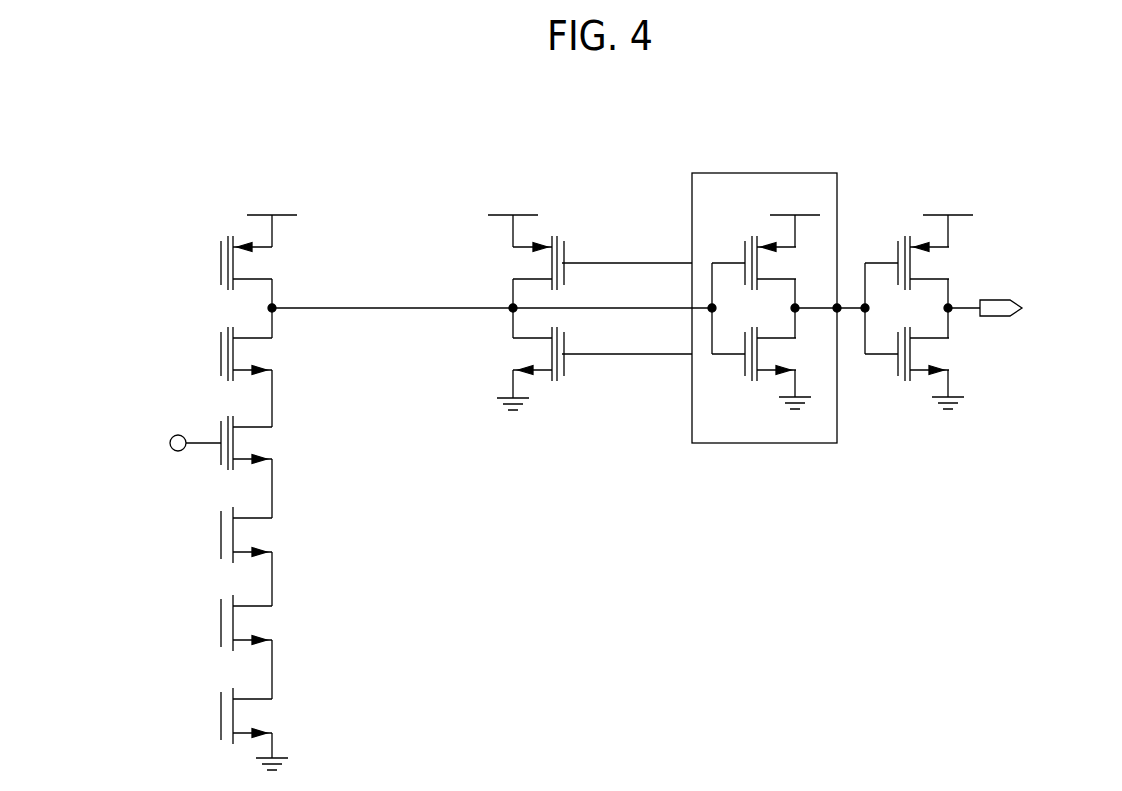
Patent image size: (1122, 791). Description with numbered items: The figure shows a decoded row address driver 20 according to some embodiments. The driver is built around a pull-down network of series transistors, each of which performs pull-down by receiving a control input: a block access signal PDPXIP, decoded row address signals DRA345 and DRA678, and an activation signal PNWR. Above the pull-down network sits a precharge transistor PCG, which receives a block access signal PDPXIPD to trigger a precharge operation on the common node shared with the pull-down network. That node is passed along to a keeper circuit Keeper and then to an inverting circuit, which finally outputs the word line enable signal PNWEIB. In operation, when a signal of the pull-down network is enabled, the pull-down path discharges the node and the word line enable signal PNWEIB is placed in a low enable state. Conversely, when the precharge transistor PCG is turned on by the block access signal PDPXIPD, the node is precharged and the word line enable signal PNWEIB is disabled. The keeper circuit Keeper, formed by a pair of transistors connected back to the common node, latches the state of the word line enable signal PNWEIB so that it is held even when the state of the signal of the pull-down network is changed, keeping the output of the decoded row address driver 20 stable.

The write enable signal generation circuit 20 is at (588, 125).
The block access signal PDPXIPD is at (221, 263).
The precharge transistor PCG is at (299, 294).
The block access signal PDPXIP is at (221, 354).
The decoded row address signal DRA345 is at (221, 535).
The decoded row address signal DRA678 is at (221, 623).
The activation signal PNWR is at (221, 716).
The keeper circuit Keeper is at (562, 312).
The word line enable signal PNWEIB is at (986, 312).